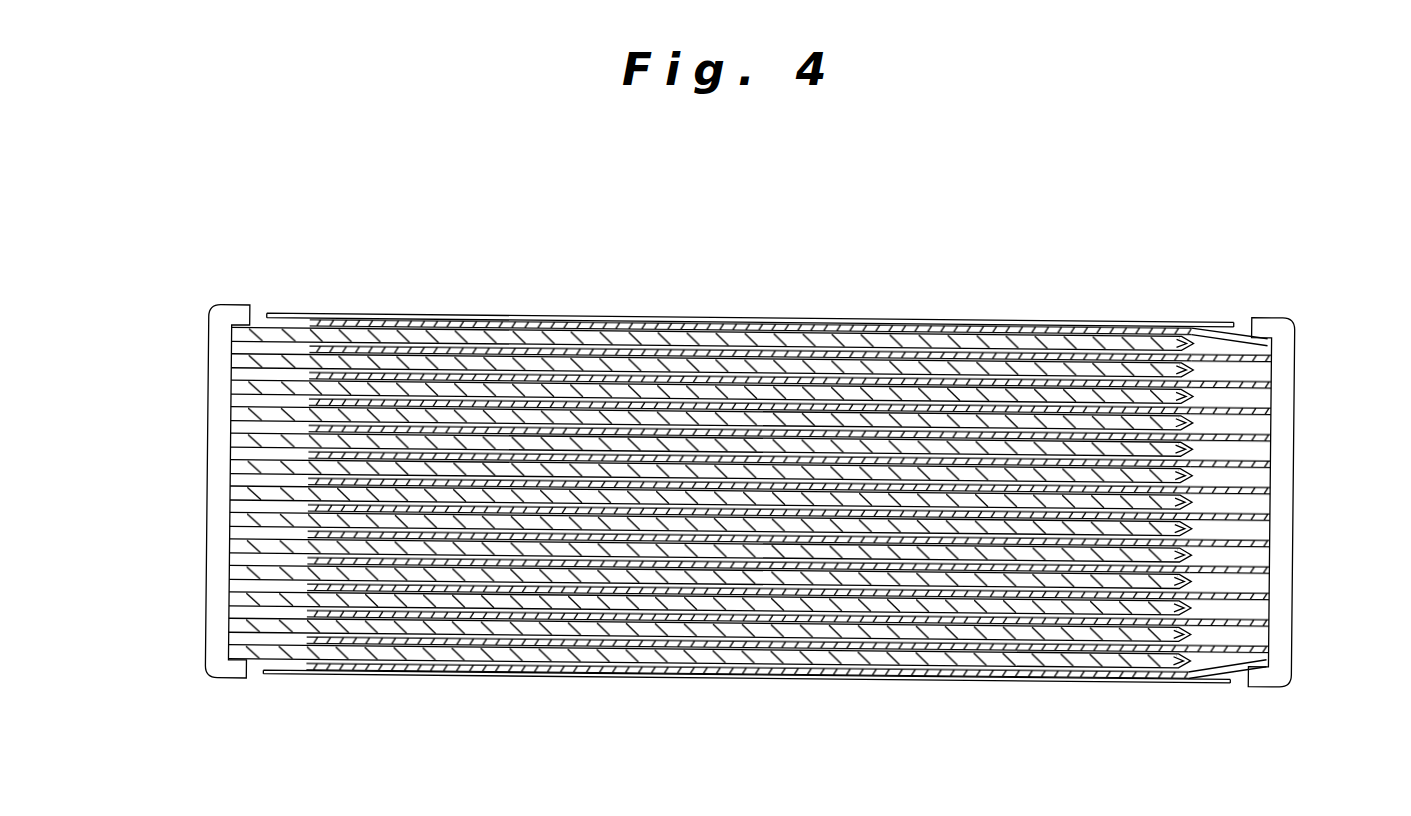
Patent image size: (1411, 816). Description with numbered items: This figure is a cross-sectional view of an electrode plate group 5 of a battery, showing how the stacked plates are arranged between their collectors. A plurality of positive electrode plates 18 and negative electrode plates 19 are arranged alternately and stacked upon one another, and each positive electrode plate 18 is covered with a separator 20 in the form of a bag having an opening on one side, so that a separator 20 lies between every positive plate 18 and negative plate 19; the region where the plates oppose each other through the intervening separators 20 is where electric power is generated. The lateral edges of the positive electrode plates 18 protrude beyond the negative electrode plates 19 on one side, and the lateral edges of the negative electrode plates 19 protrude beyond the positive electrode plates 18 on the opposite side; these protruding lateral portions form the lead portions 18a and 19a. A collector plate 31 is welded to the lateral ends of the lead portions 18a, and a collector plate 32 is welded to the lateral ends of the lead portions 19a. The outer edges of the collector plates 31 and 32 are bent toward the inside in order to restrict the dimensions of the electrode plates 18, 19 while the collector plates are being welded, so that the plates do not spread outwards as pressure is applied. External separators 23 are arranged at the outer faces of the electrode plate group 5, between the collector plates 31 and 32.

The electrode plate group 5 is at (311, 241).
The positive electrode plate 18 is at (655, 352).
The lead portion 18a is at (260, 414).
The negative electrode plate 19 is at (962, 352).
The lead portion 19a is at (1248, 407).
The separator 20 is at (800, 352).
The external separator 23 is at (503, 316).
The collector plate 31 is at (218, 496).
The collector plate 32 is at (1285, 583).